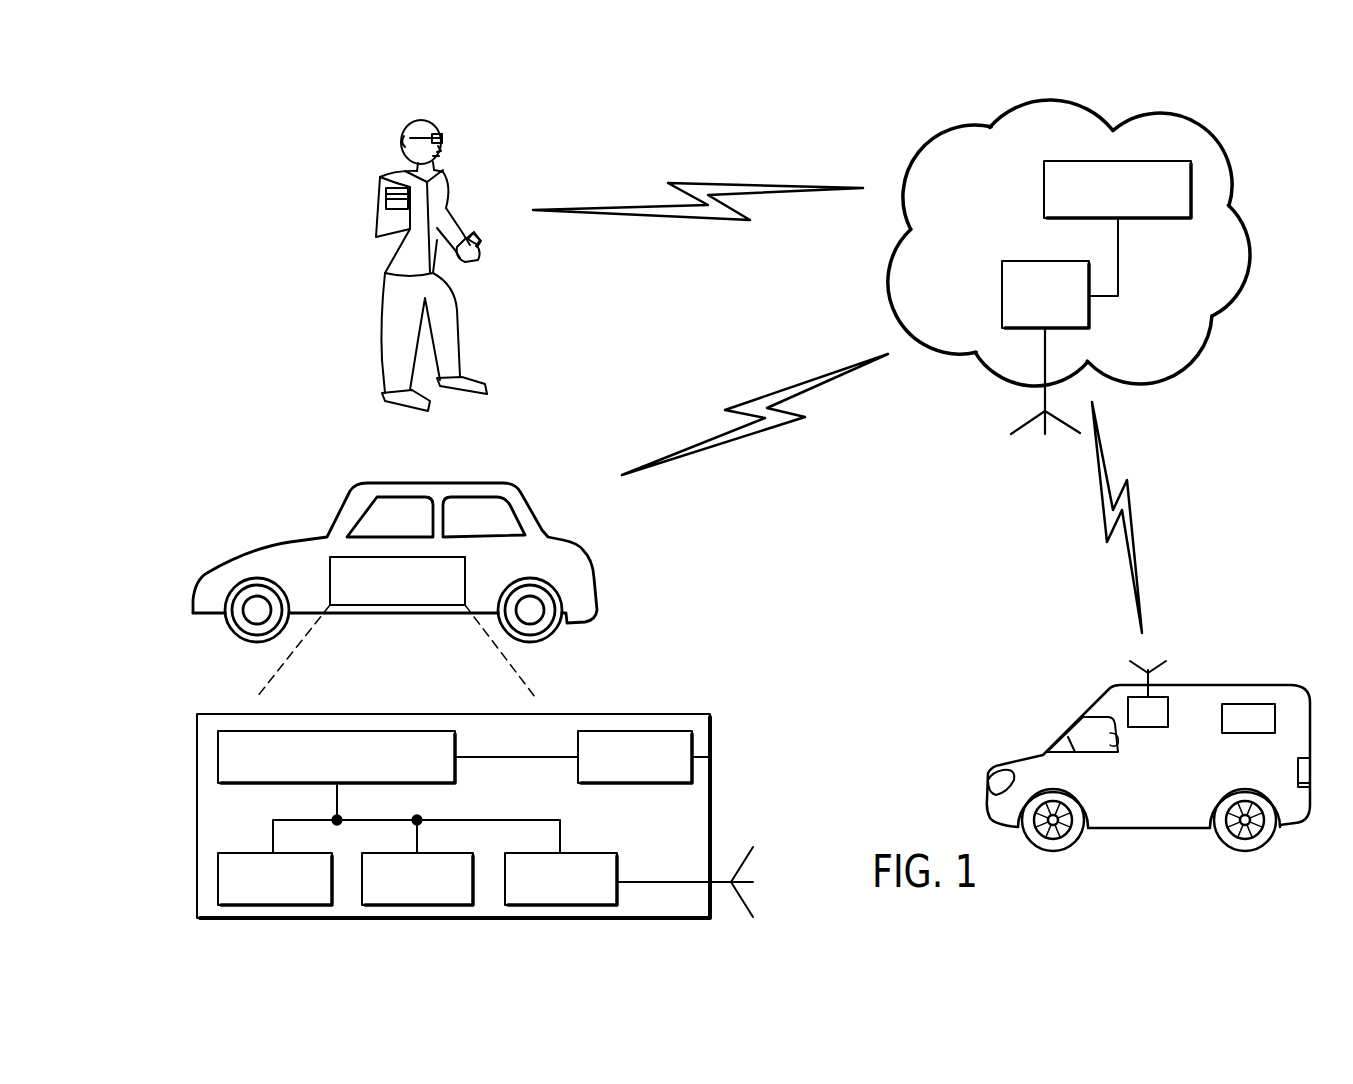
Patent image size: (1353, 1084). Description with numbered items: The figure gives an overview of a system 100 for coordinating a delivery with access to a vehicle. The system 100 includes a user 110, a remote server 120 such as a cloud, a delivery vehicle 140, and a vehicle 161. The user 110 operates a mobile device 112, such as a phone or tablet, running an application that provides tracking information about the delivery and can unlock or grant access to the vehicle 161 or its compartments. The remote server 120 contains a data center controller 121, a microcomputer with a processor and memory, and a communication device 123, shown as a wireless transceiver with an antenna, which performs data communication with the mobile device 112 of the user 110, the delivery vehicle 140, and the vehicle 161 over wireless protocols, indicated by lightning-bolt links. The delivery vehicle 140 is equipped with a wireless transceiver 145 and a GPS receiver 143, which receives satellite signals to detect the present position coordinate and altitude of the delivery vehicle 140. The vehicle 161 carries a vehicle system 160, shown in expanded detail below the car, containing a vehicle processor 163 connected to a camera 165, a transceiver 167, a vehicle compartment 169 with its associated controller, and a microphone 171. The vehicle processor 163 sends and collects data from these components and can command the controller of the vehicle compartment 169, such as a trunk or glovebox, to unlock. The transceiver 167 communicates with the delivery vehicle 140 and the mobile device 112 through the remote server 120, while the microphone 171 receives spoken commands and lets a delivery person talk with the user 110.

The system 100 is at (177, 119).
The user 110 is at (382, 152).
The mobile device 112 is at (482, 253).
The remote server 120 is at (894, 243).
The data center controller 121 is at (1044, 186).
The communication device 123 is at (1002, 292).
The vehicle system 160 is at (416, 598).
The vehicle 161 is at (437, 485).
The vehicle processor 163 is at (218, 757).
The camera 165 is at (710, 757).
The transceiver 167 is at (602, 853).
The vehicle compartment 169 is at (218, 878).
The microphone 171 is at (430, 853).
The delivery vehicle 140 is at (987, 790).
The GPS receiver 143 is at (1247, 704).
The wireless transceiver 145 is at (1128, 708).